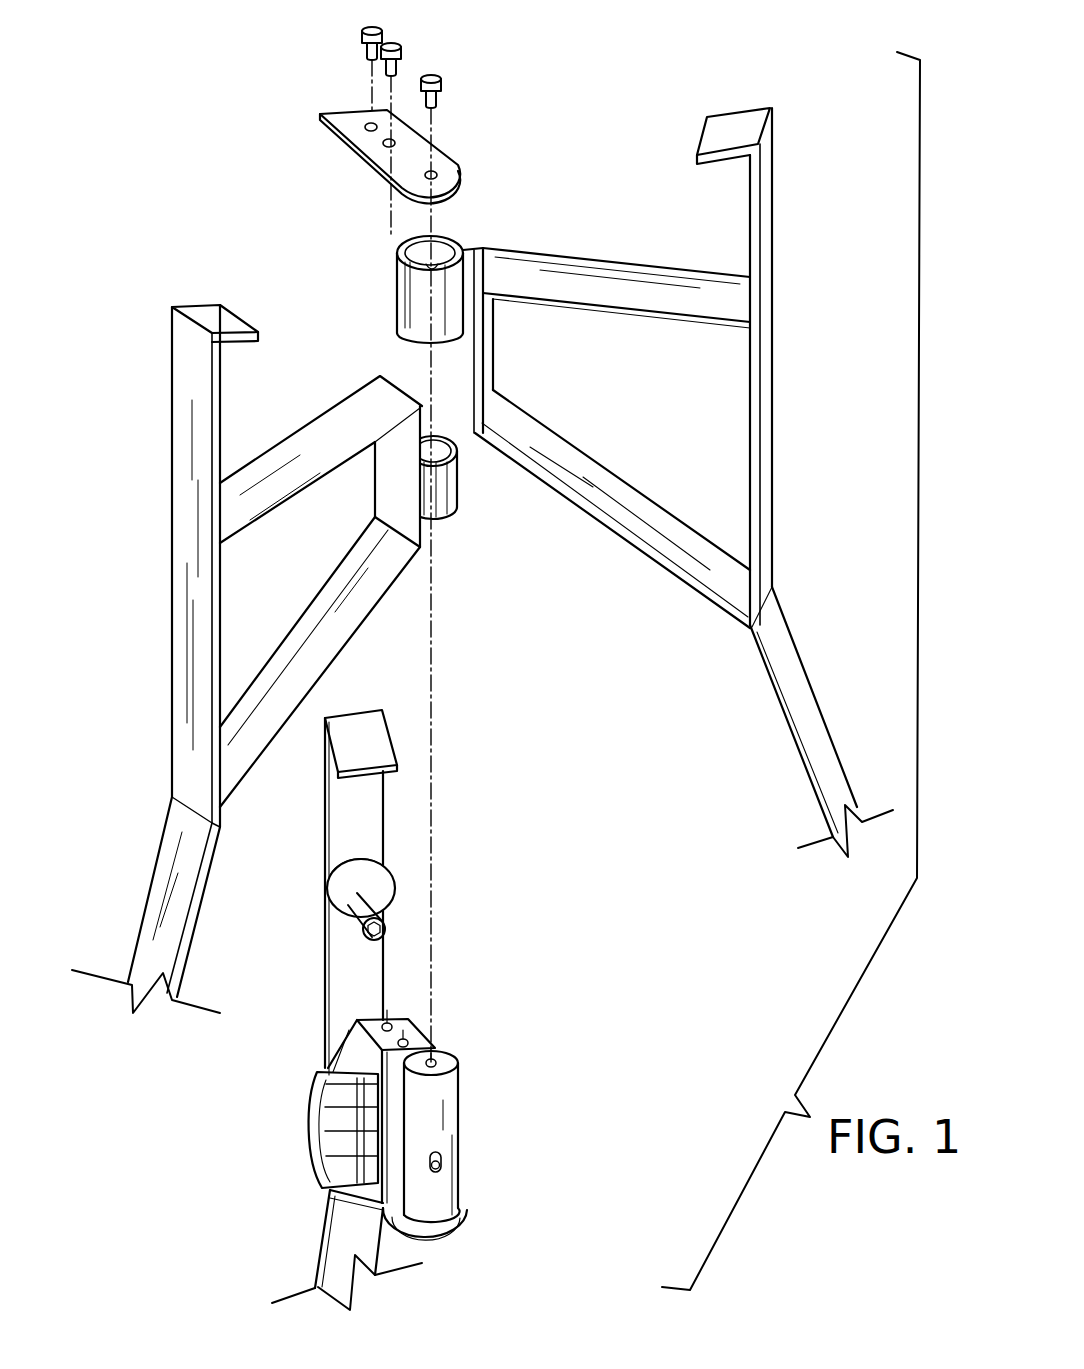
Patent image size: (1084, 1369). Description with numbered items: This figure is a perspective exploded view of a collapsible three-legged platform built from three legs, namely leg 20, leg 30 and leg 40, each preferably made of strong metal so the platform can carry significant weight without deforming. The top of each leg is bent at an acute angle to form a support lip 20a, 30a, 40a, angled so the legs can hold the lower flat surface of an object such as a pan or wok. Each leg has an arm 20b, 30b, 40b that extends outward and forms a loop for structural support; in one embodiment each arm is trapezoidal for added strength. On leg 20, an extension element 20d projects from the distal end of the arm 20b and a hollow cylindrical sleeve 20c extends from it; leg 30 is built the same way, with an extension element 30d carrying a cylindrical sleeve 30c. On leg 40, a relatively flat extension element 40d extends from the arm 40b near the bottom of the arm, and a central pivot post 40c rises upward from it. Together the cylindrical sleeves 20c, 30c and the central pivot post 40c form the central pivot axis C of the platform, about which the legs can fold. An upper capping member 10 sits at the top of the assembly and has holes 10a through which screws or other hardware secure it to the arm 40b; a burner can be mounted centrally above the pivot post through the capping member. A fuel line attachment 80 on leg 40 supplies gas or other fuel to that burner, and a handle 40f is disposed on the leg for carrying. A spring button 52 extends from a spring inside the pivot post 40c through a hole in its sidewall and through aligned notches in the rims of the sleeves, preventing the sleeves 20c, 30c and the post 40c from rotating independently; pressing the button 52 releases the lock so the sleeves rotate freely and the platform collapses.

The upper capping member 10 is at (462, 172).
The holes 10a is at (423, 175).
The leg 20 is at (292, 659).
The support lip 20a is at (213, 320).
The arm 20b is at (303, 490).
The cylindrical sleeve 20c is at (474, 477).
The extension element 20d is at (447, 485).
The leg 30 is at (645, 440).
The support lip 30a is at (731, 130).
The arm 30b is at (640, 318).
The cylindrical sleeve 30c is at (448, 237).
The extension element 30d is at (463, 311).
The leg 40 is at (398, 1010).
The support lip 40a is at (367, 743).
The arm 40b is at (365, 1047).
The central pivot post 40c is at (458, 1147).
The extension element 40d is at (452, 1240).
The handle 40f is at (313, 1108).
The spring button 52 is at (440, 1167).
The fuel line attachment 80 is at (345, 893).
The central pivot axis C is at (432, 828).